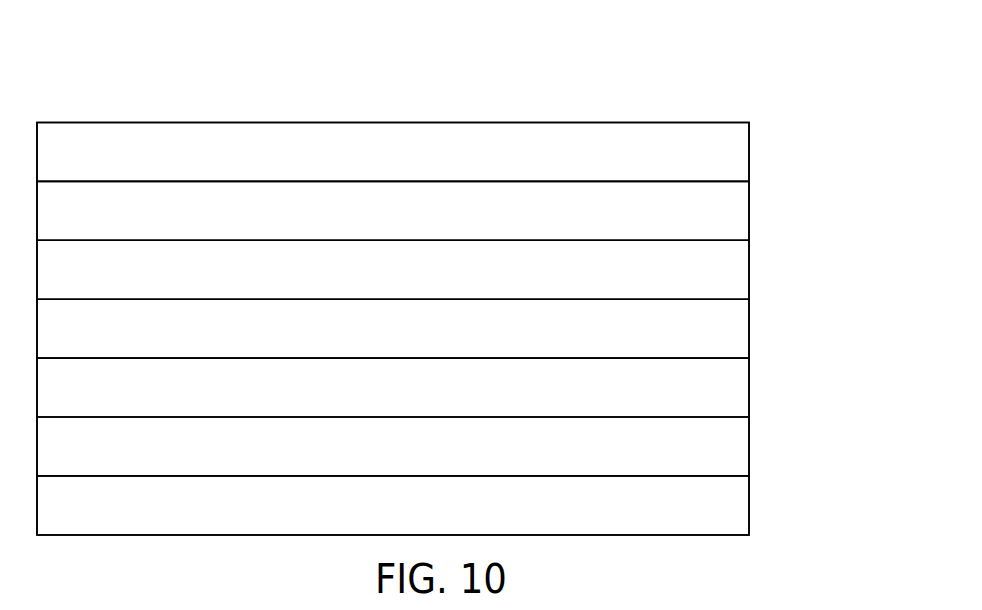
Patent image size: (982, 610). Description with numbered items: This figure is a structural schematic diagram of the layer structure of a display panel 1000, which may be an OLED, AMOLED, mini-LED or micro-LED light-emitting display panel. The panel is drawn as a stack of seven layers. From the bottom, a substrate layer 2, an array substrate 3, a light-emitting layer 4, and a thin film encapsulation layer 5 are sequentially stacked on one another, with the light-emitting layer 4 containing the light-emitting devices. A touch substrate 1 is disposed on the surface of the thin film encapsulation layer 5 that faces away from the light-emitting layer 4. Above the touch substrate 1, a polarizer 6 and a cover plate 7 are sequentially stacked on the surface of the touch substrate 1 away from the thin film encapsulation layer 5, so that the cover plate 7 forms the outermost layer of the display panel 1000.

The display panel 1000 is at (603, 78).
The cover plate 7 is at (749, 152).
The polarizer 6 is at (749, 211).
The touch substrate 1 is at (749, 270).
The thin film encapsulation layer 5 is at (749, 329).
The light-emitting layer 4 is at (749, 388).
The array substrate 3 is at (749, 447).
The substrate layer 2 is at (749, 506).